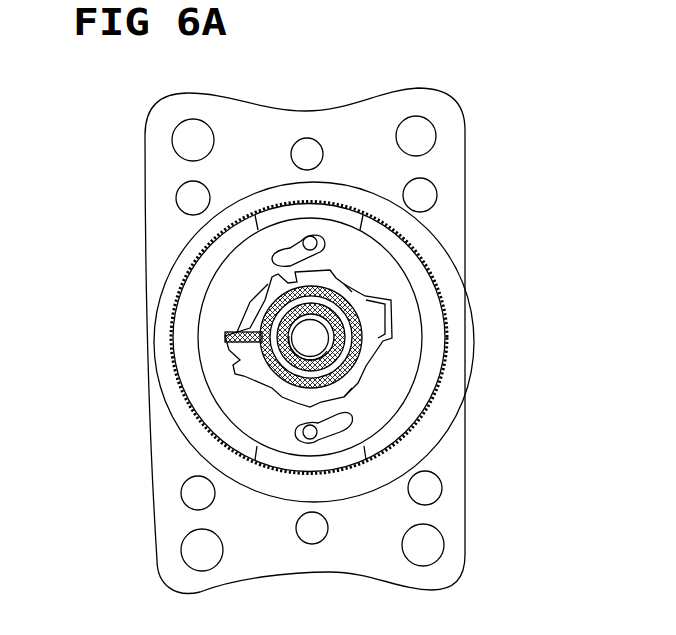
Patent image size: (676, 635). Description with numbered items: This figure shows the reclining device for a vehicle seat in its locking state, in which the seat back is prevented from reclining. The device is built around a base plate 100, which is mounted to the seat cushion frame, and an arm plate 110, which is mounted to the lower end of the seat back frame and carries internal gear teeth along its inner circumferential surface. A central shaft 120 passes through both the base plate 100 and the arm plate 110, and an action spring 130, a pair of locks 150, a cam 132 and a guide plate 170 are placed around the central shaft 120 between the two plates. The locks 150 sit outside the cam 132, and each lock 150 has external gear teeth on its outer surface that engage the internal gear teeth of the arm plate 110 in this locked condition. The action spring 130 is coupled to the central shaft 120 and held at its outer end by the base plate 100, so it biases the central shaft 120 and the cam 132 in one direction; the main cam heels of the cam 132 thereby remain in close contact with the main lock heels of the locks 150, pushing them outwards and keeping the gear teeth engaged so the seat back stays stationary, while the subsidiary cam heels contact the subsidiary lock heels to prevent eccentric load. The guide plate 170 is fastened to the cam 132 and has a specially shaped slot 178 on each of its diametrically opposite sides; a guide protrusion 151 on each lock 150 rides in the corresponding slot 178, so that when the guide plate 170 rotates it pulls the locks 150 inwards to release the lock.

The base plate 100 is at (460, 495).
The arm plate 110 is at (160, 333).
The central shaft 120 is at (317, 340).
The action spring 130 is at (383, 318).
The cam 132 is at (234, 366).
The lock 150 is at (334, 213).
The guide protrusion 151 is at (310, 238).
The guide plate 170 is at (383, 262).
The specially shaped slot 178 is at (270, 255).